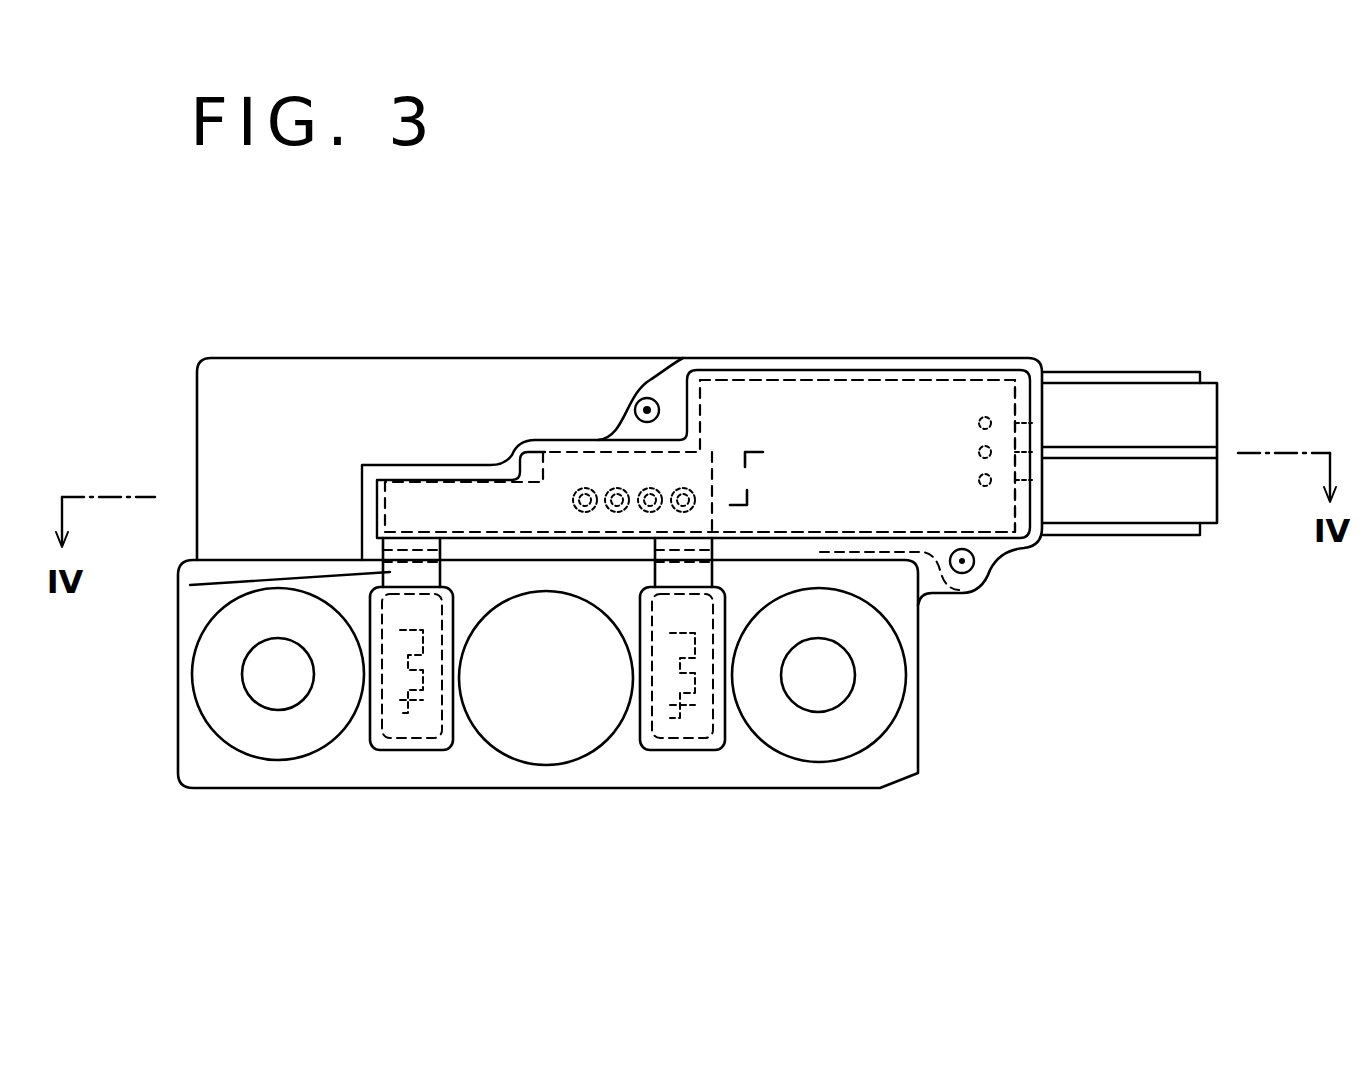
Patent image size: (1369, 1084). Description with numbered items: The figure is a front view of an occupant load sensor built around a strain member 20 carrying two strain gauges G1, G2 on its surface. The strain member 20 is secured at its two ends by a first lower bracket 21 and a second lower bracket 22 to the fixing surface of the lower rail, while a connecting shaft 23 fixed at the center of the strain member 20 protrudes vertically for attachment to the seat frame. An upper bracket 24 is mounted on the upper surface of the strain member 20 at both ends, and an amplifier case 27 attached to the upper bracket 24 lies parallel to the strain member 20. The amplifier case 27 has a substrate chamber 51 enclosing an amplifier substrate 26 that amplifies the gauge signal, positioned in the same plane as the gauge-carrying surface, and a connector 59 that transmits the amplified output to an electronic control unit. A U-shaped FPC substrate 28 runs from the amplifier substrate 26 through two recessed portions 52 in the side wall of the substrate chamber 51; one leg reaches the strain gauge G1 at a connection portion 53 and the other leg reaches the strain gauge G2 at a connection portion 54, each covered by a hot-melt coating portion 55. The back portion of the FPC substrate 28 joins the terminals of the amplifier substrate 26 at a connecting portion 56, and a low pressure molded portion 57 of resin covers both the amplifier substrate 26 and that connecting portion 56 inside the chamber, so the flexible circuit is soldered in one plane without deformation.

The strain member 20 is at (610, 768).
The first lower bracket 21 is at (252, 735).
The second lower bracket 22 is at (848, 735).
The connecting shaft 23 is at (537, 750).
The upper bracket 24 is at (303, 380).
The amplifier substrate 26 is at (830, 400).
The amplifier case 27 is at (665, 395).
The FPC substrate 28 is at (190, 585).
The substrate chamber 51 is at (1024, 358).
The recessed portion 52 is at (413, 558).
The connection portion 53 is at (413, 738).
The connection portion 54 is at (667, 740).
The coating portion 55 is at (443, 748).
The connecting portion 56 is at (603, 490).
The low pressure molded portion 57 is at (780, 405).
The connector 59 is at (1165, 398).
The strain gauge G1 is at (410, 710).
The strain gauge G2 is at (680, 713).